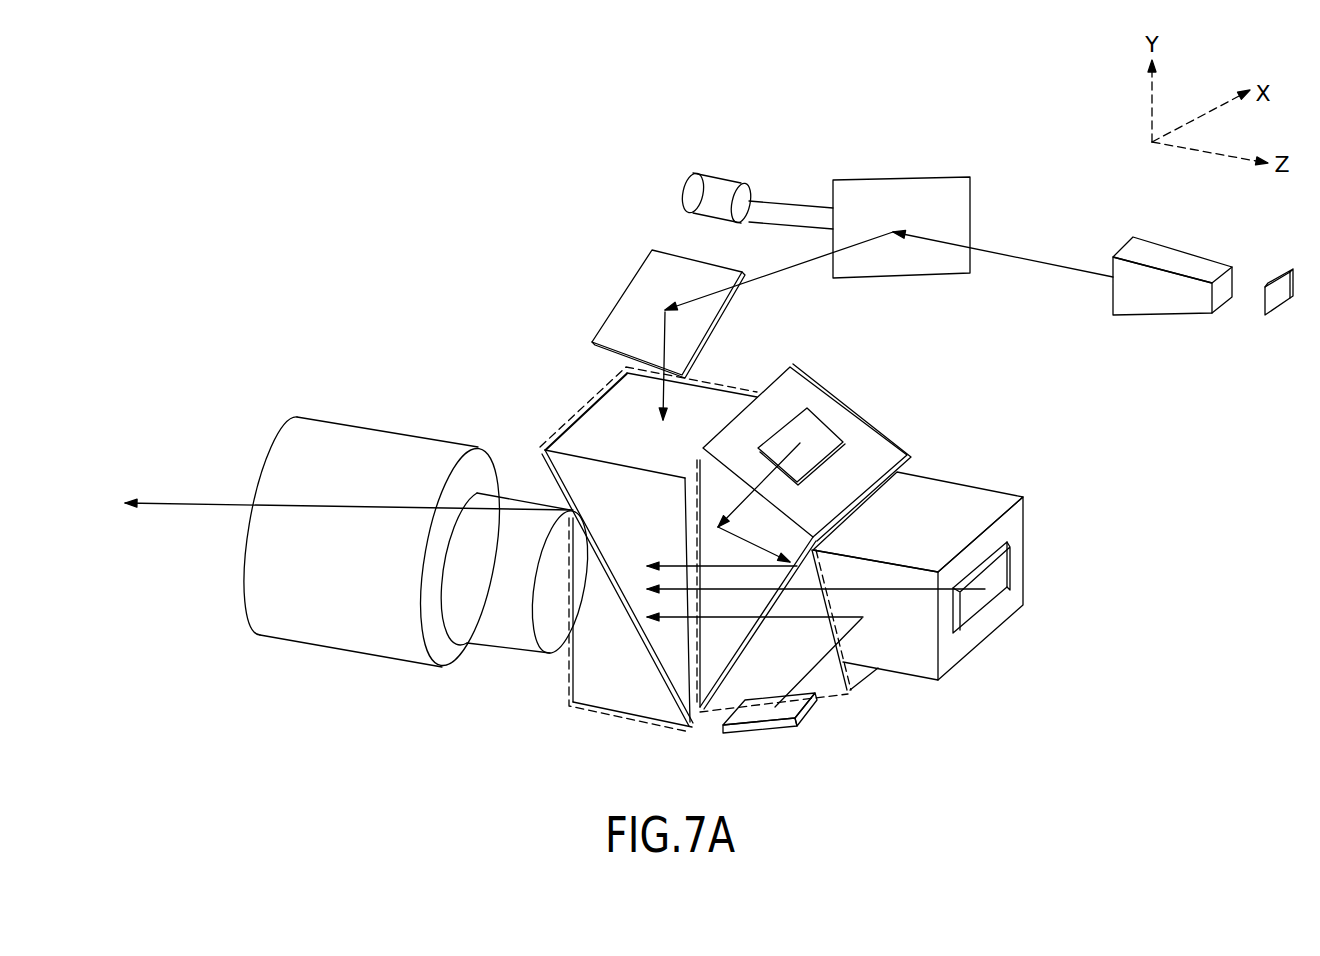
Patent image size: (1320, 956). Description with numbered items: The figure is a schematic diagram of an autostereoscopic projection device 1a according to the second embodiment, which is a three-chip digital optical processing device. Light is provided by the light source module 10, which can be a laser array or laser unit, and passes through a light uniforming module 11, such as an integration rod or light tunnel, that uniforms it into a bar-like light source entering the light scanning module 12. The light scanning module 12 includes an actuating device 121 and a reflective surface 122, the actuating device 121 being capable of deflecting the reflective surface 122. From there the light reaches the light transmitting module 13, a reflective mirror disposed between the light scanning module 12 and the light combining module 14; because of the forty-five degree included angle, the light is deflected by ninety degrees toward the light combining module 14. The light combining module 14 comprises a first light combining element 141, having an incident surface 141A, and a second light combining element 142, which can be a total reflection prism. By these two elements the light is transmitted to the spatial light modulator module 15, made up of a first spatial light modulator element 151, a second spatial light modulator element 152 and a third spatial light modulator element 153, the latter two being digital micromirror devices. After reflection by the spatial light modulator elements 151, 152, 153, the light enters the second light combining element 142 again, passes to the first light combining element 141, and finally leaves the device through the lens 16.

The projection device 1a is at (273, 190).
The light source module 10 is at (1283, 297).
The light uniforming module 11 is at (1163, 310).
The light scanning module 12 is at (633, 230).
The actuating device 121 is at (722, 190).
The reflective surface 122 is at (873, 184).
The light transmitting module 13 is at (670, 260).
The light combining module 14 is at (701, 506).
The first light combining element 141 is at (636, 527).
The incident surface 141A is at (595, 440).
The second light combining element 142 is at (743, 325).
The spatial light modulator module 15 is at (929, 576).
The first spatial light modulator element 151 is at (980, 600).
The second spatial light modulator element 152 is at (765, 712).
The third spatial light modulator element 153 is at (823, 438).
The lens 16 is at (345, 432).